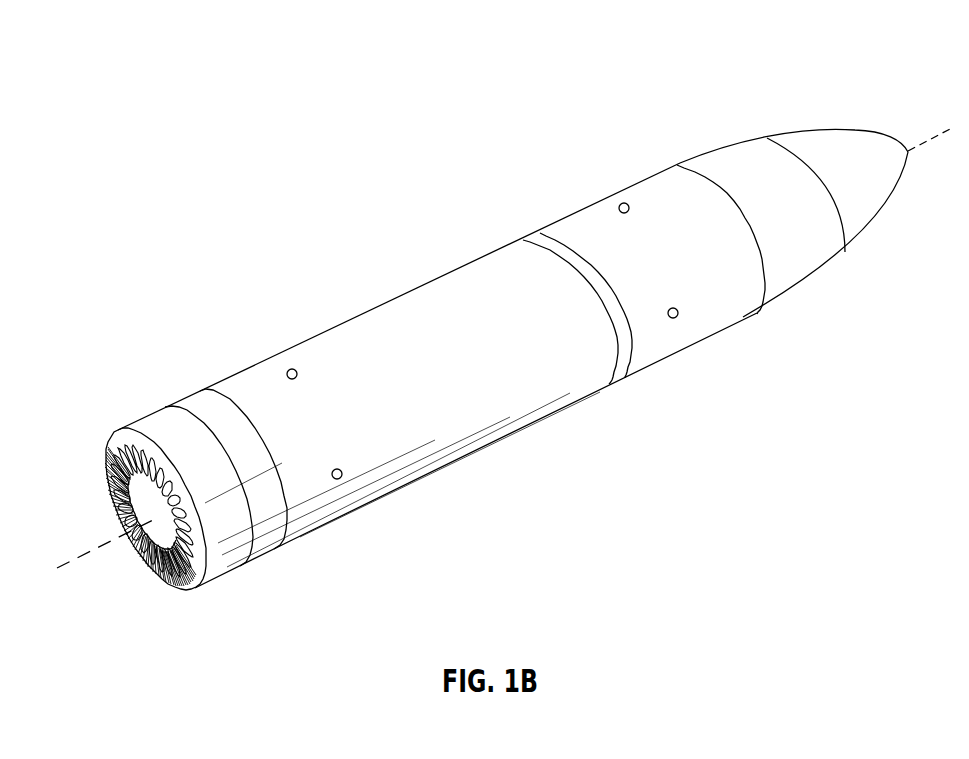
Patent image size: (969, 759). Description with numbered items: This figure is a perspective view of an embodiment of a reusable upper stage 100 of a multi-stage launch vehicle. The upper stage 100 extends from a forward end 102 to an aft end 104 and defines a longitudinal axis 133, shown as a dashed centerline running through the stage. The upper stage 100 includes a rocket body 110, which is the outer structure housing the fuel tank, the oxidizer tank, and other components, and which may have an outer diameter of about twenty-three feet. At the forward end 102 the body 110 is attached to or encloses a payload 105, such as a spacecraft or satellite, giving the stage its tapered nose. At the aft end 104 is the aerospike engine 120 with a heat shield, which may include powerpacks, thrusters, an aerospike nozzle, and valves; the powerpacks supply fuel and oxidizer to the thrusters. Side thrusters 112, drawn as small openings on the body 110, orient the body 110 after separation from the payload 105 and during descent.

The upper stage 100 is at (575, 128).
The forward end 102 is at (853, 220).
The aft end 104 is at (150, 417).
The payload 105 is at (826, 94).
The rocket body 110 is at (413, 307).
The side thrusters 112 is at (620, 203).
The aerospike engine 120 is at (100, 490).
The longitudinal axis 133 is at (78, 563).